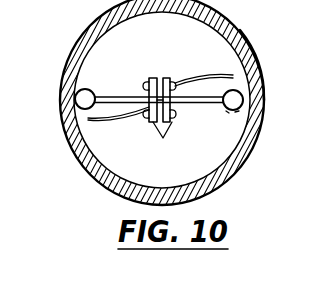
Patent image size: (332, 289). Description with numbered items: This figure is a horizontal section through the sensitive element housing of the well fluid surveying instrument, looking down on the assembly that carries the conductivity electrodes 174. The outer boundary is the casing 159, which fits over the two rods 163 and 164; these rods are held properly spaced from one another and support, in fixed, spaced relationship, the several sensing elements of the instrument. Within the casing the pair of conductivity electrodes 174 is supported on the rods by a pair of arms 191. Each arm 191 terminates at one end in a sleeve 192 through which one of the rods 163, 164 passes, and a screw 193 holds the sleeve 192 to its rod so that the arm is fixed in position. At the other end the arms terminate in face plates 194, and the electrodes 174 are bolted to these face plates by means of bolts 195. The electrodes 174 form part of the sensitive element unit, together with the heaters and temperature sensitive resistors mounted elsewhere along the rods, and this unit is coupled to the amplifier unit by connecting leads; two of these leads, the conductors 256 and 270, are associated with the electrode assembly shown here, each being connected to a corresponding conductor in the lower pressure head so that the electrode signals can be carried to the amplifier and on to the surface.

The casing 159 is at (257, 34).
The rod 163 is at (66, 114).
The rod 164 is at (255, 88).
The sleeve 192 is at (71, 70).
The screw 193 is at (70, 127).
The arm 191 is at (126, 87).
The face plate 194 is at (165, 77).
The bolt 195 is at (147, 118).
The conductivity electrodes 174 is at (163, 139).
The conductor 256 is at (90, 119).
The conductor 270 is at (198, 59).